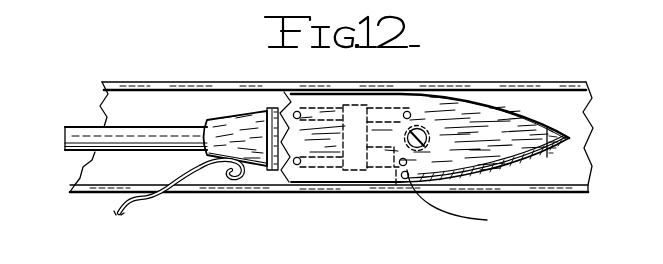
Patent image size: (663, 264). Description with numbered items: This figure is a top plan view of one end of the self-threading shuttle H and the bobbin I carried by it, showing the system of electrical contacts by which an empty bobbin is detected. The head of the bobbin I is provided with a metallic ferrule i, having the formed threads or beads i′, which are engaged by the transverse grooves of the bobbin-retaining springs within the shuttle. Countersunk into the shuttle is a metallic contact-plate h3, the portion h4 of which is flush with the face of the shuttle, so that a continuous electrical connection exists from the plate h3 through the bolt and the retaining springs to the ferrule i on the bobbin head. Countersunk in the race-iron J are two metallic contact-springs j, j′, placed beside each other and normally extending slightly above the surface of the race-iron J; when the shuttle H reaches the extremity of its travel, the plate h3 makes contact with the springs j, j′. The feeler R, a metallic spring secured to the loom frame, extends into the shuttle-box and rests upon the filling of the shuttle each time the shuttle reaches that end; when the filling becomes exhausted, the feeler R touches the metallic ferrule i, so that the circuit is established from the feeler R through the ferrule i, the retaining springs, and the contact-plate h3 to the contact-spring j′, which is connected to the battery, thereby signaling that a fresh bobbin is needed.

The bobbin I is at (160, 132).
The metallic ferrule i is at (240, 124).
The formed threads or beads i′ is at (276, 170).
The self-threading shuttle H is at (450, 110).
The race-iron J is at (550, 157).
The metallic contact-spring j is at (404, 108).
The metallic contact-spring j′ is at (320, 170).
The portion of contact-plate h4 is at (355, 171).
The metallic contact-plate h3 is at (396, 171).
The feeler R is at (178, 181).